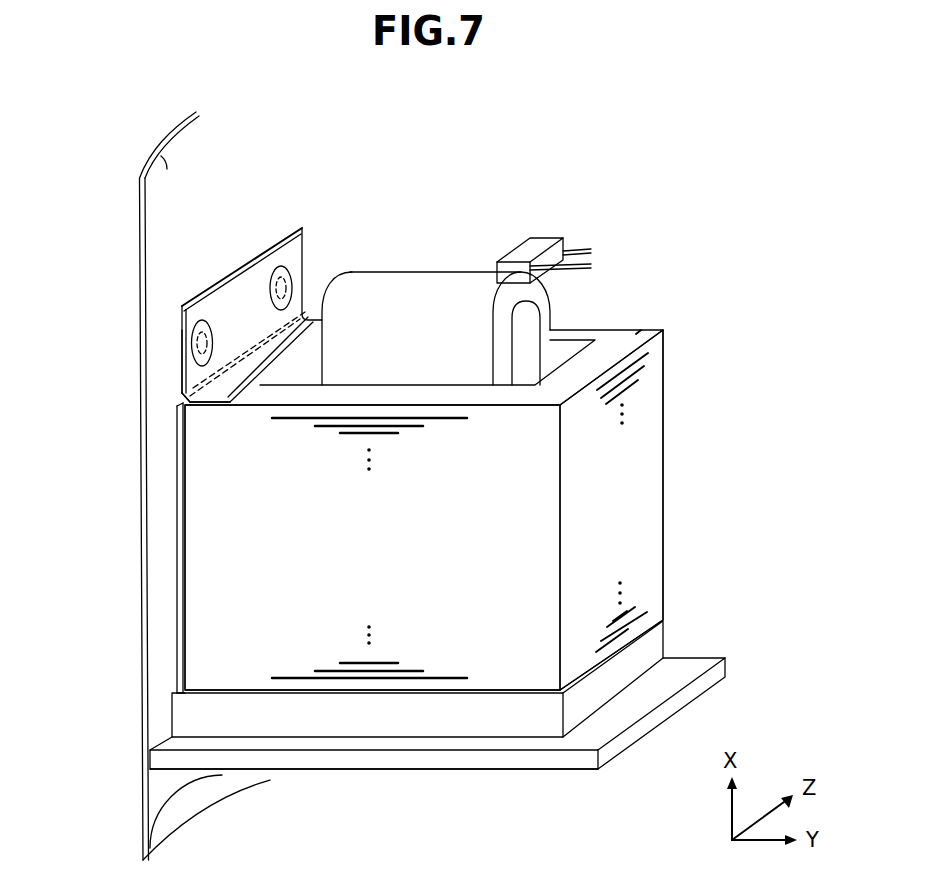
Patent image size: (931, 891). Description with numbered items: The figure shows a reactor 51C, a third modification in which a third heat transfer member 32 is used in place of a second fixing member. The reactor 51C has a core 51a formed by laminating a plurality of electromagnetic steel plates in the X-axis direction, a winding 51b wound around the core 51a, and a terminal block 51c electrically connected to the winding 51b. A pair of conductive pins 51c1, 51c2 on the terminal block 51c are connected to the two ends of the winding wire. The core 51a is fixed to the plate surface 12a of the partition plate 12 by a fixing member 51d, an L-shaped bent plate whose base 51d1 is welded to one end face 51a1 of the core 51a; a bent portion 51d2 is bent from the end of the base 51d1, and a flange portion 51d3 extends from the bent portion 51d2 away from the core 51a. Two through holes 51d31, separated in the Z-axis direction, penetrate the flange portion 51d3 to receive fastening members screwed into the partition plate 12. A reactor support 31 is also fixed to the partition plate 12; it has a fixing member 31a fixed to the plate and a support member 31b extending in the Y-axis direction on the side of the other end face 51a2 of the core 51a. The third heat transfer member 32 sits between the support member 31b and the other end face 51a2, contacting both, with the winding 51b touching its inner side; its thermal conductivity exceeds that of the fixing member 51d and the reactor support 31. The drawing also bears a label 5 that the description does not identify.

The partition plate 12 is at (139, 216).
The plate surface 12a is at (166, 150).
The flange / mounting portion 5 is at (175, 470).
The fixing member 51d is at (284, 232).
The through holes 51d31 is at (272, 283).
The flange portion 51d3 is at (181, 376).
The bent portion 51d2 is at (182, 396).
The base 51d1 is at (178, 412).
The winding 51b is at (423, 285).
The terminal block 51c is at (520, 240).
The conductive pin 51c1 is at (592, 251).
The conductive pin 51c2 is at (592, 266).
The reactor 51C is at (663, 558).
The core 51a is at (527, 490).
The one end face 51a1 is at (630, 331).
The other end face 51a2 is at (648, 616).
The third heat transfer member 32 is at (630, 667).
The reactor support 31 is at (350, 772).
The fixing member 31a is at (163, 780).
The support member 31b is at (392, 762).